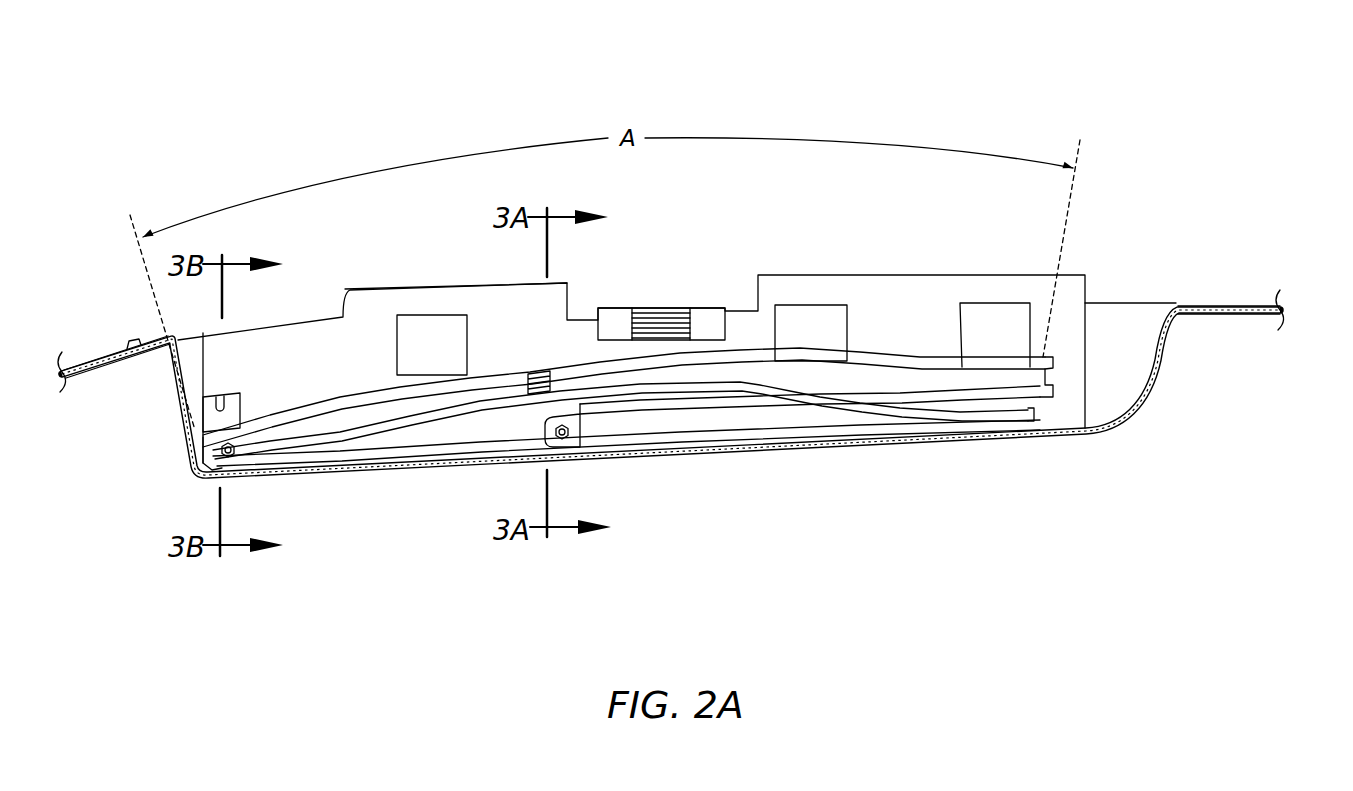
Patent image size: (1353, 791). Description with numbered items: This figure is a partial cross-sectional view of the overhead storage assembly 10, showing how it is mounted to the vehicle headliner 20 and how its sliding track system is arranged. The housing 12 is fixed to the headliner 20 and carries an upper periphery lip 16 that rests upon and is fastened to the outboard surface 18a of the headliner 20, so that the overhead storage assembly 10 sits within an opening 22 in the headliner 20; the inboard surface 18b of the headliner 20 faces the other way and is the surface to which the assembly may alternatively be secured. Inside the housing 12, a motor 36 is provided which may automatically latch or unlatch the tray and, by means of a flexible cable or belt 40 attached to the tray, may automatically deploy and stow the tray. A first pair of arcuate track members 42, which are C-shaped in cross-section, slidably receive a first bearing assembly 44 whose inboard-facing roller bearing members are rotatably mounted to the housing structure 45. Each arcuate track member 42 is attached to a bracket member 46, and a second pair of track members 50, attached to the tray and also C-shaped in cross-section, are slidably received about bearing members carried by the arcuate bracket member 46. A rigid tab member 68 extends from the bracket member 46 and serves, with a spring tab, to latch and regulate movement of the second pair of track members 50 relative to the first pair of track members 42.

The overhead storage assembly 10 is at (946, 90).
The housing 12 is at (1143, 408).
The upper periphery lip 16 is at (157, 340).
The outboard surface 18a is at (106, 355).
The inboard surface 18b is at (107, 365).
The headliner 20 is at (78, 378).
The opening 22 is at (1124, 318).
The motor 36 is at (665, 296).
The cable or belt 40 is at (645, 305).
The first pair of arcuate track members 42 is at (390, 408).
The first bearing assembly 44 is at (538, 372).
The housing structure 45 is at (277, 323).
The bracket member 46 is at (493, 428).
The second pair of track members 50 is at (778, 412).
The rigid tab member 68 is at (233, 385).